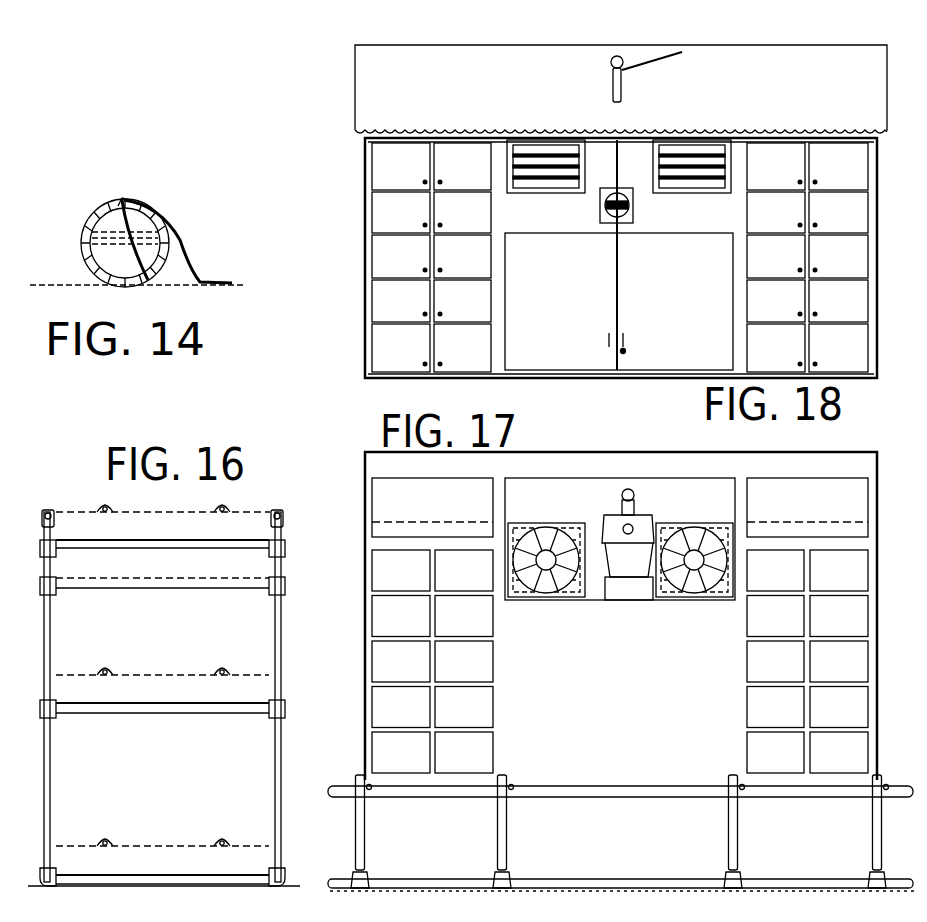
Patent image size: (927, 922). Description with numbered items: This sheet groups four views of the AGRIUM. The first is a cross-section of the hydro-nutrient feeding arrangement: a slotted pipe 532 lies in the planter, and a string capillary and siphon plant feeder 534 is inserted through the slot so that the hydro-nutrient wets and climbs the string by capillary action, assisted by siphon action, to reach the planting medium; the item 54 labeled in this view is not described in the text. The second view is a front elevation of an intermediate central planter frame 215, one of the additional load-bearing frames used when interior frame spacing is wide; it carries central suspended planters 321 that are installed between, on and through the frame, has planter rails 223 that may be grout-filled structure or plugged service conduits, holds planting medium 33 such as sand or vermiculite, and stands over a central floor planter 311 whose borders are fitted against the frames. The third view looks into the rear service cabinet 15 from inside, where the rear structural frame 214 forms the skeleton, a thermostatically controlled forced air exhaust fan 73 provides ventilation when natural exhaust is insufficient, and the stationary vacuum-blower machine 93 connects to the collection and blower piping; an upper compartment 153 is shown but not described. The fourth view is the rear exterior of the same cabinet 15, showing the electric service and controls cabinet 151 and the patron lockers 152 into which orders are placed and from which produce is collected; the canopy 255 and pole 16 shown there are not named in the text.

In FIG. 14, the shelf support tube 54 is at (100, 250).
In FIG. 14, the slotted pipe 532 is at (90, 244).
In FIG. 16, the slotted pipe 532 is at (108, 675).
In FIG. 14, the string capillary and siphon plant feeder 534 is at (140, 200).
In FIG. 18, the canopy 255 is at (567, 91).
In FIG. 18, the flag pole 16 is at (622, 91).
In FIG. 18, the rear service cabinet 15 is at (362, 313).
In FIG. 17, the rear service cabinet 15 is at (362, 673).
In FIG. 18, the patron locker 152 is at (480, 263).
In FIG. 17, the patron locker 152 is at (483, 662).
In FIG. 18, the electric service and controls cabinet 151 is at (700, 310).
In FIG. 17, the upper cabinet 153 is at (398, 535).
In FIG. 17, the forced air exhaust fan 73 is at (675, 580).
In FIG. 17, the vacuum-blower machine 93 is at (638, 520).
In FIG. 17, the rear structural frame 214 is at (365, 826).
In FIG. 16, the intermediate central planter frame 215 is at (50, 624).
In FIG. 16, the central suspended planter 321 is at (152, 542).
In FIG. 16, the planter rail 223 is at (279, 522).
In FIG. 16, the planting medium 33 is at (172, 676).
In FIG. 16, the central floor planter 311 is at (136, 860).